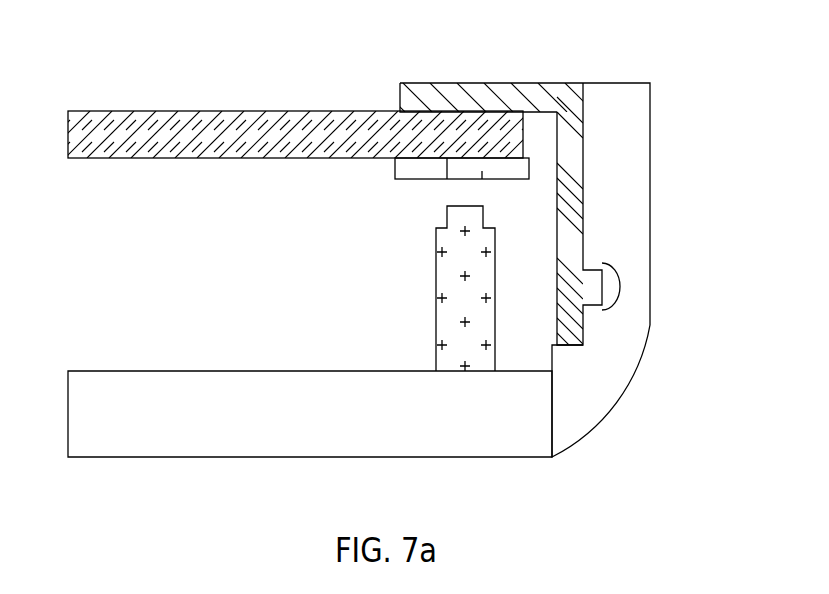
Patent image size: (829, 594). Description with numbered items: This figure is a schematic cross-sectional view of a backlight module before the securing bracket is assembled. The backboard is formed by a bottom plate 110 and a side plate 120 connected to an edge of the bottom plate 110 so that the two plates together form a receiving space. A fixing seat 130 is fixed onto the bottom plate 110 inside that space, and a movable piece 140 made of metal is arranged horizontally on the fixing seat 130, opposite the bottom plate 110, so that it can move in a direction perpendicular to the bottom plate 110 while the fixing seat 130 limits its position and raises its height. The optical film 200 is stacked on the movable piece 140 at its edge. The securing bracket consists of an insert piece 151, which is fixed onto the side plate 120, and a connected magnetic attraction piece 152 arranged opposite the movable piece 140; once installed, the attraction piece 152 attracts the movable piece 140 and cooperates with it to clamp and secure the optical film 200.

The bottom plate 110 is at (302, 443).
The side plate 120 is at (633, 215).
The fixing seat 130 is at (452, 308).
The movable piece 140 is at (407, 172).
The insert piece 151 is at (568, 155).
The attraction piece 152 is at (515, 93).
The optical film 200 is at (195, 132).